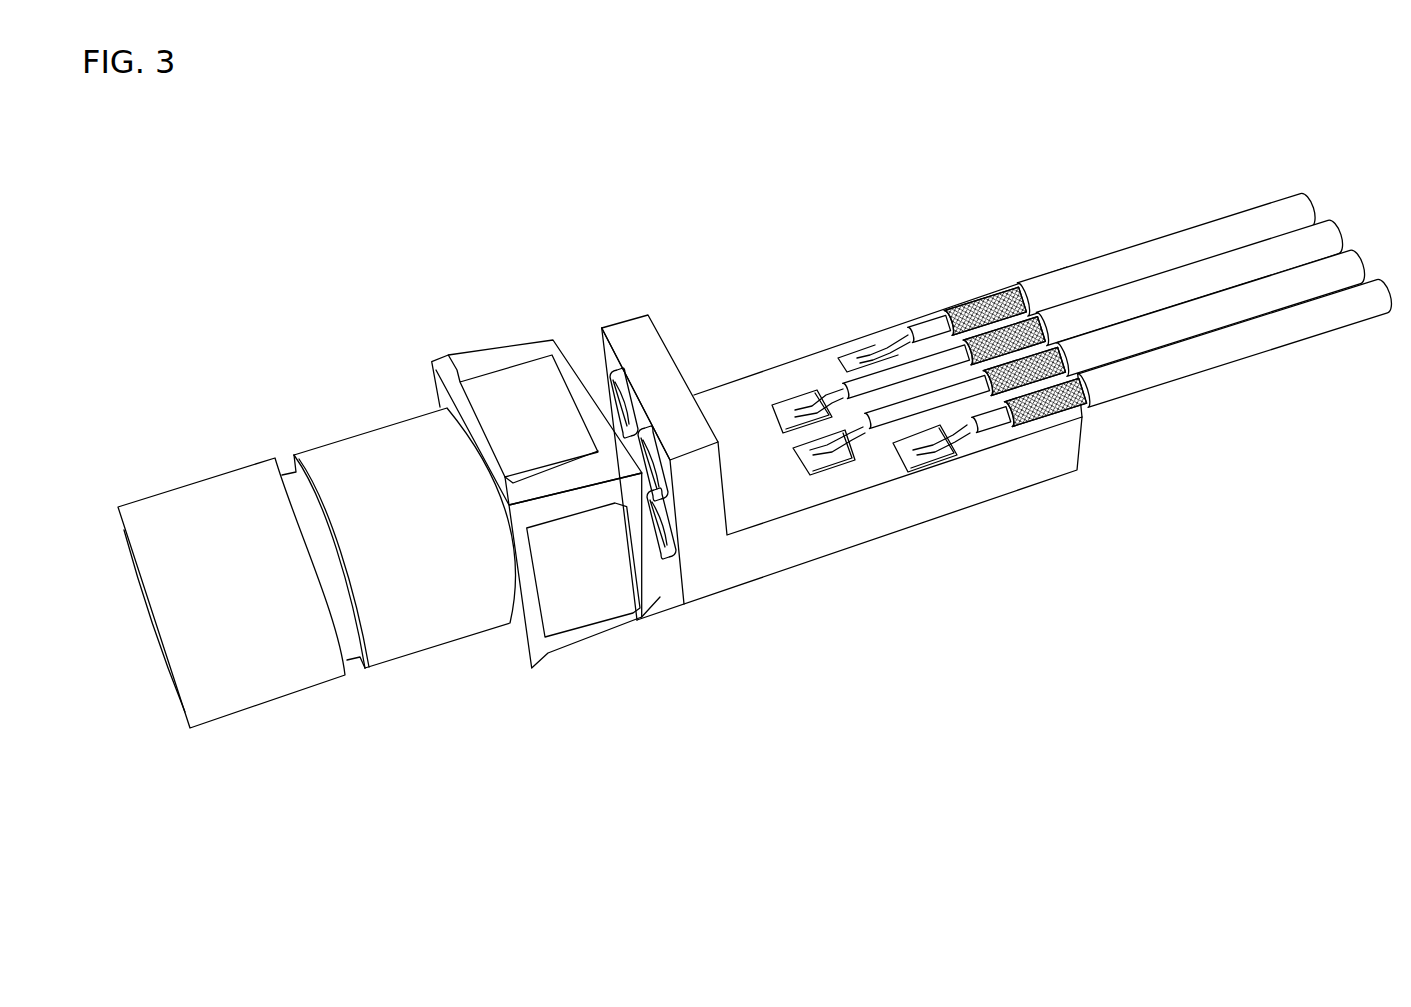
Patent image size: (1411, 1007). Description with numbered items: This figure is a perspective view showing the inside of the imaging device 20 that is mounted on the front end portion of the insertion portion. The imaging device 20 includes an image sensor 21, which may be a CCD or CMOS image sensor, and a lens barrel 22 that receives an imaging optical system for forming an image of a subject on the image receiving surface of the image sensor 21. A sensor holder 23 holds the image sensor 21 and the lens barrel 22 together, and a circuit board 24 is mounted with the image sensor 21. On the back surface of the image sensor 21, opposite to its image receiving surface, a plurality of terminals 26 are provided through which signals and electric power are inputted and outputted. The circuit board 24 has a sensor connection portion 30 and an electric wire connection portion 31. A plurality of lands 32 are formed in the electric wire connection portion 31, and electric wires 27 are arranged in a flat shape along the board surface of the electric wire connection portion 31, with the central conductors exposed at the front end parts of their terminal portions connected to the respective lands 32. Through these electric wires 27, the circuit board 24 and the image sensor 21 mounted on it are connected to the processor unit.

The imaging device 20 is at (258, 197).
The image sensor 21 is at (523, 352).
The lens barrel 22 is at (205, 490).
The sensor holder 23 is at (375, 445).
The circuit board 24 is at (693, 195).
The terminals 26 is at (658, 558).
The electric wires 27 is at (1143, 252).
The sensor connection portion 30 is at (650, 444).
The electric wire connection portion 31 is at (797, 363).
The lands 32 is at (850, 357).